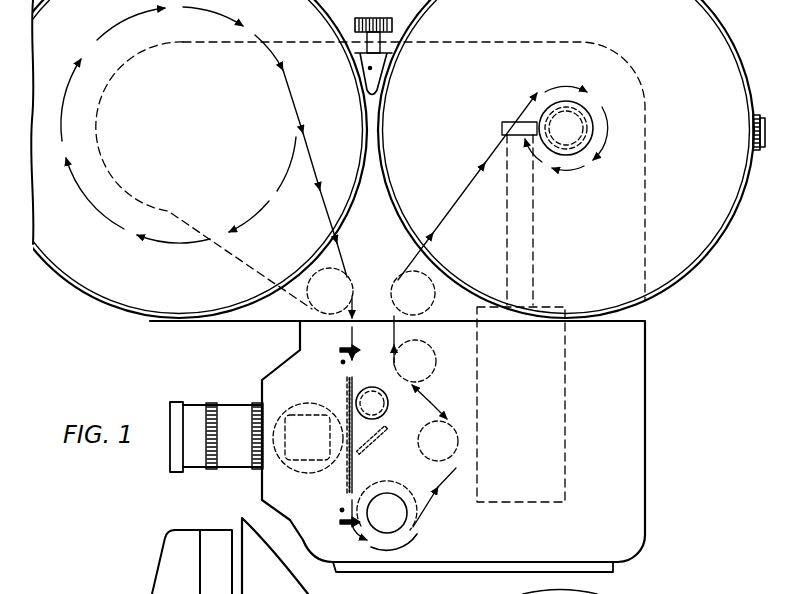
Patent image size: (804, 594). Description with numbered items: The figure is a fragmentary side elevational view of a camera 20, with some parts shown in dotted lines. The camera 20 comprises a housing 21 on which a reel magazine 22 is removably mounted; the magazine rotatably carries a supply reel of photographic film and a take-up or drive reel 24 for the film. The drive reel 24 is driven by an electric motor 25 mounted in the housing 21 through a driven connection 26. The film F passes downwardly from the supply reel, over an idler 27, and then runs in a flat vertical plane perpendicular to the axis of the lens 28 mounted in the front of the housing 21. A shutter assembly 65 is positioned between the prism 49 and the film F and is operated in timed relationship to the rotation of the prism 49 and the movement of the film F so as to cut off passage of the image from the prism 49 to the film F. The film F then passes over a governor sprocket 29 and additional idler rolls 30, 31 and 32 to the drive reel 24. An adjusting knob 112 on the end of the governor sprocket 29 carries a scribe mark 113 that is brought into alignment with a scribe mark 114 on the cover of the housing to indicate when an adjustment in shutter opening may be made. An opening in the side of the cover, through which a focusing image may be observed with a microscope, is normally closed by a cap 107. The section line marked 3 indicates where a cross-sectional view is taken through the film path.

The camera 20 is at (647, 371).
The housing 21 is at (606, 352).
The reel magazine 22 is at (414, 171).
The take-up or drive reel 24 is at (581, 109).
The electric motor 25 is at (557, 410).
The driven connection 26 is at (532, 258).
The idler 27 is at (348, 278).
The lens 28 is at (195, 410).
The governor sprocket 29 is at (423, 513).
The idler roll 30 is at (433, 424).
The idler roll 31 is at (427, 367).
The idler roll 32 is at (433, 281).
The prism 49 is at (318, 402).
The shutter assembly 65 is at (337, 476).
The cap 107 is at (380, 371).
The adjusting knob 112 is at (397, 528).
The scribe mark 113 is at (388, 494).
The scribe mark 114 is at (392, 497).
The section line 3- 3 is at (353, 437).
The film F is at (317, 183).